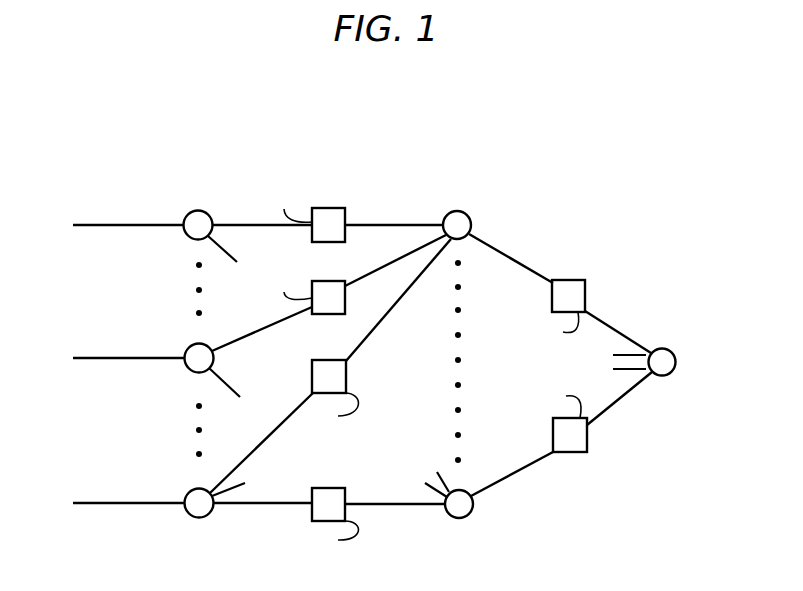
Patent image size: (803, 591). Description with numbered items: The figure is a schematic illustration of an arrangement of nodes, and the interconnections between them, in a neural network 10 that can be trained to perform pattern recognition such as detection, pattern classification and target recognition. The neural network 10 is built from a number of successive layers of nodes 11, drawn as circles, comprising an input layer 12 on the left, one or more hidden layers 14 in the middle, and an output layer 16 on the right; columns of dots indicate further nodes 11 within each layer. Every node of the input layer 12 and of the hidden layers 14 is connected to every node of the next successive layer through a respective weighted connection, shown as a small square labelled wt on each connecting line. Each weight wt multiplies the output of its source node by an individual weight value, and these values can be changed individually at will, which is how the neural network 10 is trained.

The neural network 10 is at (348, 146).
The nodes 11 is at (185, 233).
The input layer 12 is at (198, 198).
The hidden layers 14 is at (457, 198).
The output layer 16 is at (661, 200).